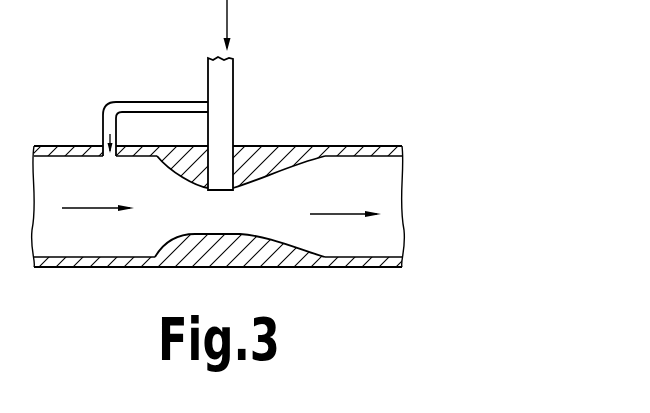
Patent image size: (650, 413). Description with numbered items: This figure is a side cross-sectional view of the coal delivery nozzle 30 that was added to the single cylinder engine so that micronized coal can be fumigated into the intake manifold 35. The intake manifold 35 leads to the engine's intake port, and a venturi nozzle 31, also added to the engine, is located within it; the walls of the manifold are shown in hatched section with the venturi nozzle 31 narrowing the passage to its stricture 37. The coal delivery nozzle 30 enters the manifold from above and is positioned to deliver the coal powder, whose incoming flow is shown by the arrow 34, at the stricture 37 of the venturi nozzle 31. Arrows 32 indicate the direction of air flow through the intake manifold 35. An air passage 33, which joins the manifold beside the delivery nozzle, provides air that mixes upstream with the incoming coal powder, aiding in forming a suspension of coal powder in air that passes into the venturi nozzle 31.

The coal delivery nozzle 30 is at (238, 140).
The venturi nozzle 31 is at (300, 165).
The arrows indicating air flow direction 32 is at (101, 180).
The air passage 33 is at (111, 100).
The arrow indicating coal powder flow 34 is at (229, 17).
The intake manifold 35 is at (121, 267).
The stricture 37 is at (231, 222).